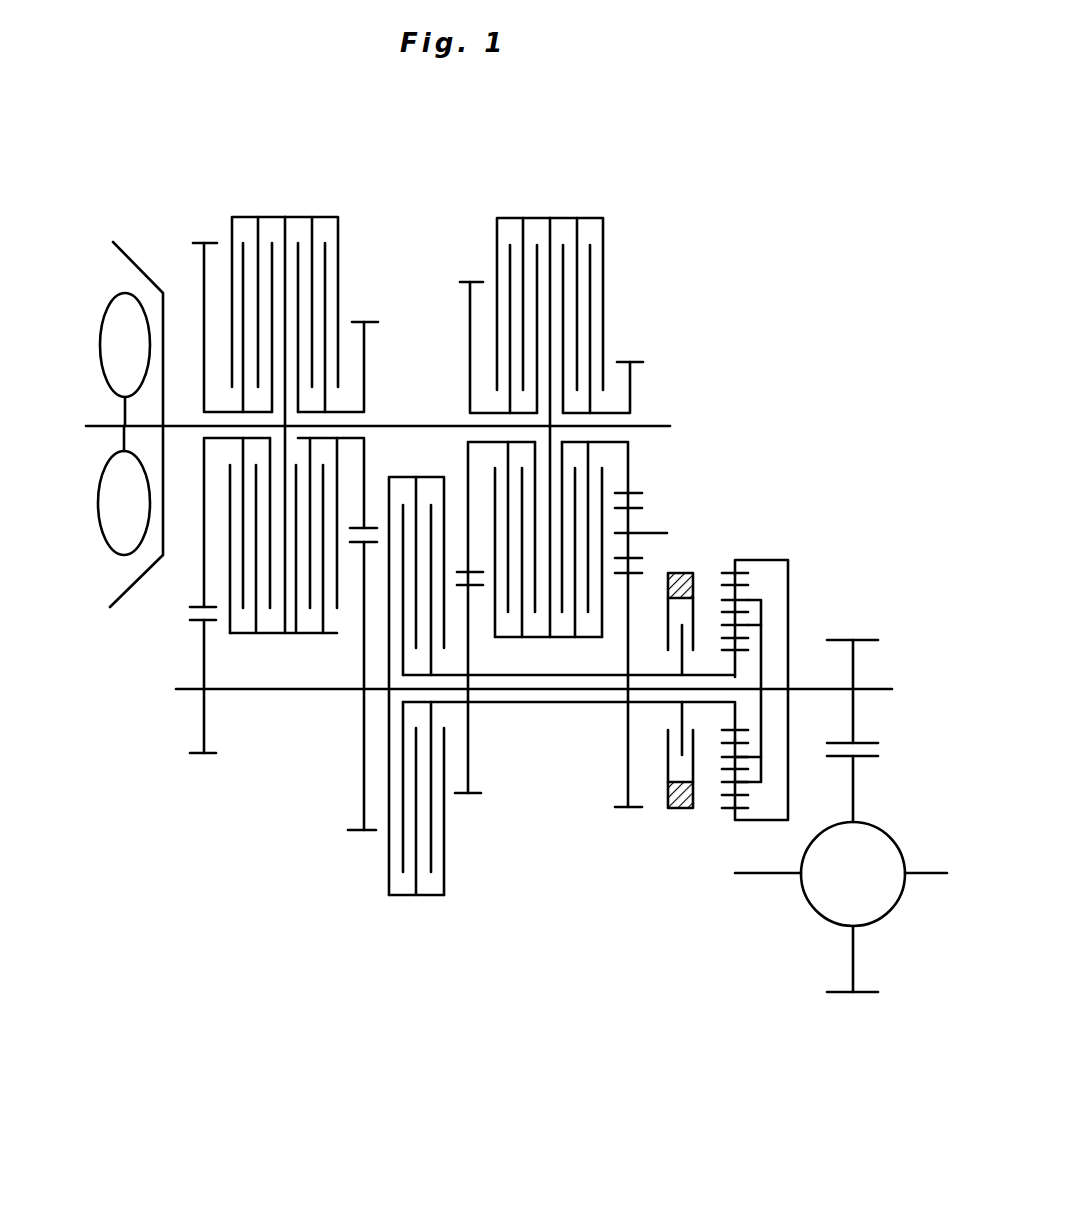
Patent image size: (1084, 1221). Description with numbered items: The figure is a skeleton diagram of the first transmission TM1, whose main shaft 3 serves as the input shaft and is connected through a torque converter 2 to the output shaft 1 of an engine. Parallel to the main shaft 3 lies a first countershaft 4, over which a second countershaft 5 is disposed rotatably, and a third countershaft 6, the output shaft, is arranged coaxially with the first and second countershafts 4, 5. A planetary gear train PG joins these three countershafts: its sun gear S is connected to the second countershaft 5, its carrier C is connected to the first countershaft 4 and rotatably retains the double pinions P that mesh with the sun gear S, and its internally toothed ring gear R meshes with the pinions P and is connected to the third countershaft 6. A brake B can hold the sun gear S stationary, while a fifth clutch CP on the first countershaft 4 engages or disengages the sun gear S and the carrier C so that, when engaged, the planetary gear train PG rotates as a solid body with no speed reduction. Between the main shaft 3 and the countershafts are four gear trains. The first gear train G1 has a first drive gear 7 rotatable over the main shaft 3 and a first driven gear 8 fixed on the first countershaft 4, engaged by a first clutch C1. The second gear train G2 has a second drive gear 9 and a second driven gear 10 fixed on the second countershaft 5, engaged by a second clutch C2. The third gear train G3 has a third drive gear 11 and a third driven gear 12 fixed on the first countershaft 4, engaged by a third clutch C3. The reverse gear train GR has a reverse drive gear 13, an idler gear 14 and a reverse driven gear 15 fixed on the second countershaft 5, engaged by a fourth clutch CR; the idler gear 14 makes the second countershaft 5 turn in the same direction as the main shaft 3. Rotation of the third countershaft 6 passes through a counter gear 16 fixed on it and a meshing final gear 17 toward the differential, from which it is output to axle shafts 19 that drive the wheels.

The output shaft 1 is at (86, 427).
The torque converter 2 is at (103, 262).
The main shaft 3 is at (655, 428).
The first countershaft 4 is at (268, 691).
The second countershaft 5 is at (543, 704).
The third countershaft 6 is at (878, 690).
The first drive gear 7 is at (371, 321).
The first driven gear 8 is at (355, 832).
The second drive gear 9 is at (463, 282).
The second driven gear 10 is at (468, 797).
The third drive gear 11 is at (197, 242).
The third driven gear 12 is at (197, 756).
The reverse drive gear 13 is at (643, 362).
The idler gear 14 is at (633, 507).
The reverse driven gear 15 is at (632, 809).
The counter gear 16 is at (868, 640).
The final gear 17 is at (835, 994).
The axle shafts 19 is at (937, 877).
The first gear train G1 is at (366, 300).
The second gear train G2 is at (470, 273).
The third gear train G3 is at (203, 214).
The reverse gear train GR is at (630, 356).
The first clutch C1 is at (313, 214).
The second clutch C2 is at (523, 215).
The third clutch C3 is at (260, 214).
The fourth clutch CR is at (578, 215).
The fifth clutch CP is at (415, 900).
The planetary gear train PG is at (746, 712).
The sun gear S is at (725, 650).
The ring gear R is at (725, 572).
The pinions P is at (748, 585).
The carrier C is at (762, 668).
The brake B is at (678, 571).
The first transmission TM1 is at (712, 195).